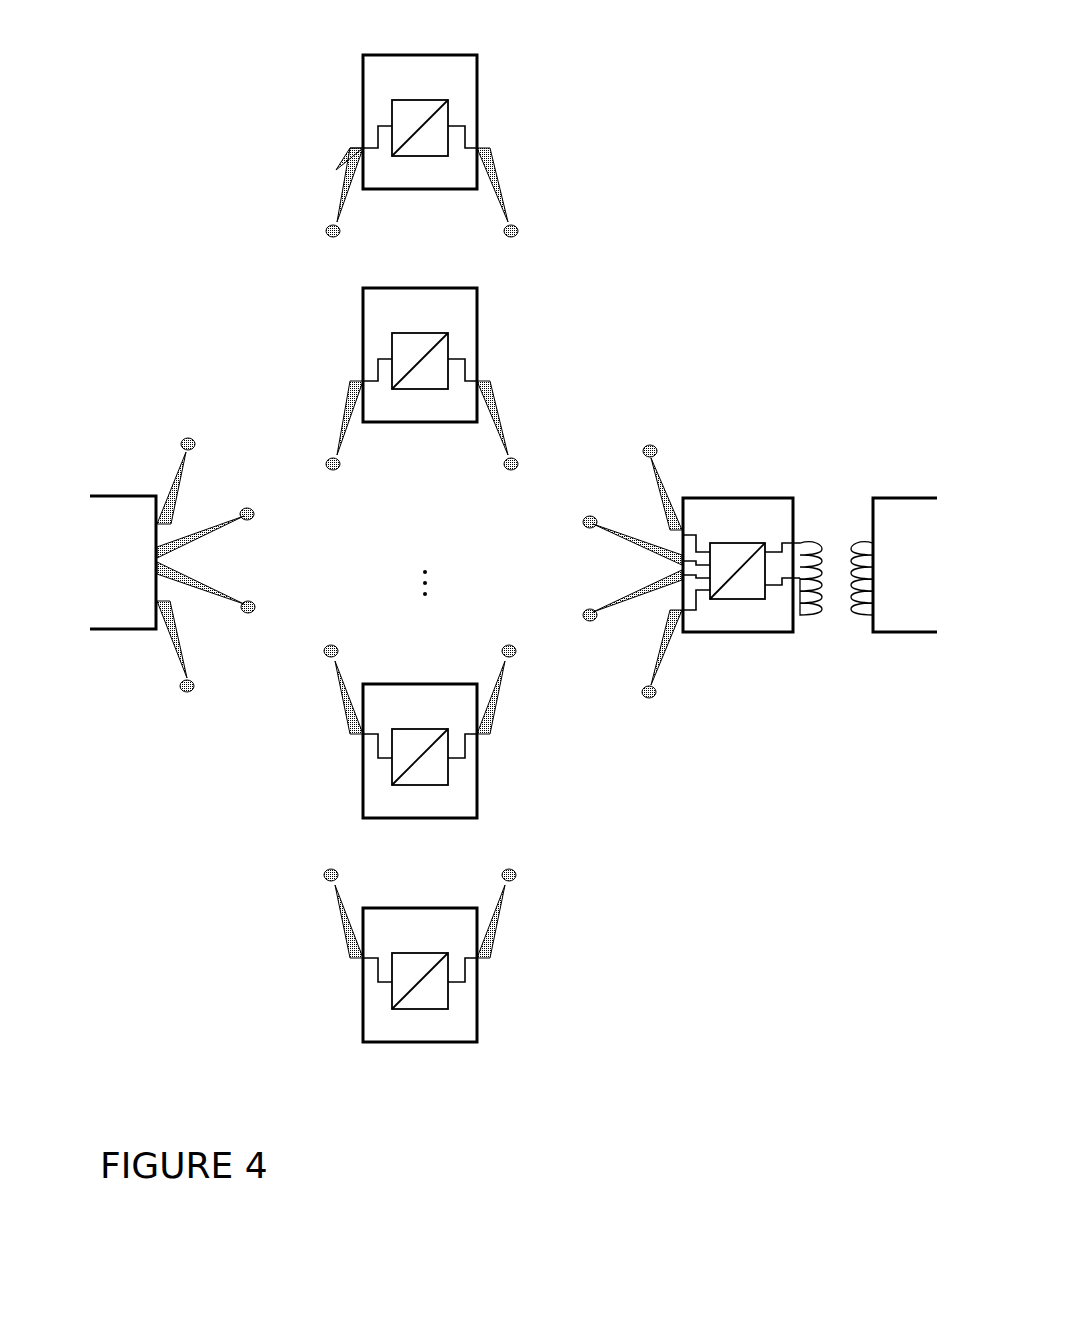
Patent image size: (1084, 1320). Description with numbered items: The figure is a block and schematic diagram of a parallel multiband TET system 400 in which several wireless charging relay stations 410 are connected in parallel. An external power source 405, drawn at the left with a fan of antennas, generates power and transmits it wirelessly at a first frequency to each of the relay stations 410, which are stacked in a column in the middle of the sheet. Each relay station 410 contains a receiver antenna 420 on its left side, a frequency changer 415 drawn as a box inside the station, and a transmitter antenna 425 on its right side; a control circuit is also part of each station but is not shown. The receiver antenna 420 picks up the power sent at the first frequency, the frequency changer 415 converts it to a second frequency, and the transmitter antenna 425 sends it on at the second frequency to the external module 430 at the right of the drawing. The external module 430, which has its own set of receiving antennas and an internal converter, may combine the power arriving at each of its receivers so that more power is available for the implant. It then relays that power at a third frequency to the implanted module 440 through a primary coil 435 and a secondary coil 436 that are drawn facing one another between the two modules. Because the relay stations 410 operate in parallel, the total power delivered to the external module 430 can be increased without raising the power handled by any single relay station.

The parallel multiband TET system 400 is at (513, 619).
The external power source 405 is at (125, 634).
The wireless charging relay station 410 is at (363, 72).
The frequency changer 415 is at (446, 160).
The receiver antenna 420 is at (349, 150).
The transmitter antenna 425 is at (500, 146).
The external module 430 is at (748, 638).
The primary coil 435 is at (812, 528).
The secondary coil 436 is at (853, 528).
The implanted module 440 is at (868, 638).